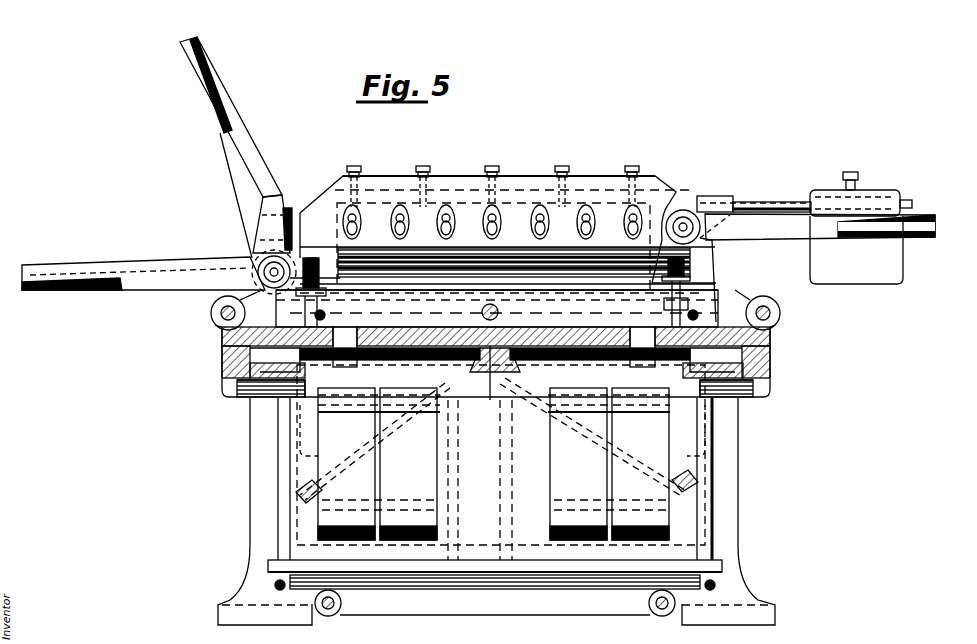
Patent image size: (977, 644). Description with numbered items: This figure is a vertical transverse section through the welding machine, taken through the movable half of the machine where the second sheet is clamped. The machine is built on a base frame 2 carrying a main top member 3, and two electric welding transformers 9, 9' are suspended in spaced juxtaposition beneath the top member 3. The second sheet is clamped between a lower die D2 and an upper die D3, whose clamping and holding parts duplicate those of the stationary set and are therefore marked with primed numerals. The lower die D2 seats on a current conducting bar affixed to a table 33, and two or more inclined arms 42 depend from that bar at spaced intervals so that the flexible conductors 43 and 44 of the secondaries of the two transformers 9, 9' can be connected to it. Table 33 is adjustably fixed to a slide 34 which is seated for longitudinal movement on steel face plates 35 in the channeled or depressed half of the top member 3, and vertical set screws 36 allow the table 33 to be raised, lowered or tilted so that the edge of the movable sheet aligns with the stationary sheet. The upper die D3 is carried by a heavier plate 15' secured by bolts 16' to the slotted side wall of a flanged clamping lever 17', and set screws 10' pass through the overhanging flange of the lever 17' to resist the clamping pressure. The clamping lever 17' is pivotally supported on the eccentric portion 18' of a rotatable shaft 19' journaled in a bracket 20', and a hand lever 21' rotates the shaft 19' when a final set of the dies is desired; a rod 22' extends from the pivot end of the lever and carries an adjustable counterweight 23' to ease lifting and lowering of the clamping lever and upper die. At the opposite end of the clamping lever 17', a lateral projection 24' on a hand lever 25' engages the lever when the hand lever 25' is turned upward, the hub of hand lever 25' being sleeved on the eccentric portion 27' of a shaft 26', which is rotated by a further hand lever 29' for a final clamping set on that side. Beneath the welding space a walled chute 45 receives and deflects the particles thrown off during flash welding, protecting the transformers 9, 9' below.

The base frame 2 is at (250, 470).
The main top member 3 is at (223, 372).
The electric welding transformer 9 is at (463, 480).
The electric welding transformer 9' is at (506, 453).
The set screws 10' is at (497, 236).
The heavier plate 15' is at (514, 250).
The bolts 16' is at (492, 222).
The clamping lever 17' is at (499, 177).
The eccentric portion 18' is at (672, 216).
The rotatable shaft 19' is at (695, 200).
The bracket 20' is at (701, 268).
The hand lever 21' is at (820, 237).
The rod 22' is at (754, 192).
The counterweight 23' is at (855, 220).
The lateral projection 24' is at (280, 211).
The hand lever 25' is at (223, 147).
The shaft 26' is at (255, 267).
The eccentric portion 27' is at (315, 276).
The hand lever 29' is at (143, 265).
The table 33 is at (385, 302).
The slide 34 is at (565, 327).
The steel face plates 35 is at (318, 362).
The vertical set screws 36 is at (712, 273).
The inclined arms 42 is at (455, 420).
The flexible conductors 43 is at (377, 464).
The flexible conductors 44 is at (609, 464).
The walled chute 45 is at (445, 385).
The lower die D2 is at (497, 275).
The upper die D3 is at (553, 262).